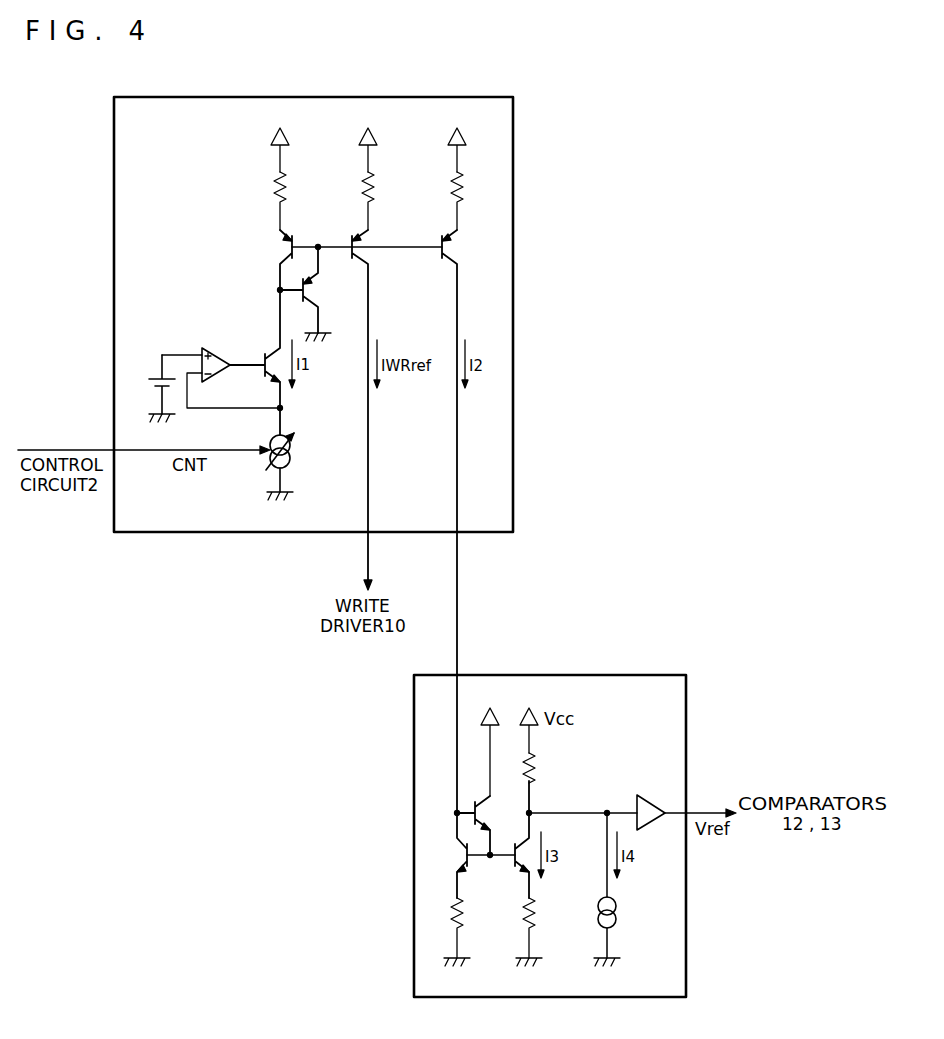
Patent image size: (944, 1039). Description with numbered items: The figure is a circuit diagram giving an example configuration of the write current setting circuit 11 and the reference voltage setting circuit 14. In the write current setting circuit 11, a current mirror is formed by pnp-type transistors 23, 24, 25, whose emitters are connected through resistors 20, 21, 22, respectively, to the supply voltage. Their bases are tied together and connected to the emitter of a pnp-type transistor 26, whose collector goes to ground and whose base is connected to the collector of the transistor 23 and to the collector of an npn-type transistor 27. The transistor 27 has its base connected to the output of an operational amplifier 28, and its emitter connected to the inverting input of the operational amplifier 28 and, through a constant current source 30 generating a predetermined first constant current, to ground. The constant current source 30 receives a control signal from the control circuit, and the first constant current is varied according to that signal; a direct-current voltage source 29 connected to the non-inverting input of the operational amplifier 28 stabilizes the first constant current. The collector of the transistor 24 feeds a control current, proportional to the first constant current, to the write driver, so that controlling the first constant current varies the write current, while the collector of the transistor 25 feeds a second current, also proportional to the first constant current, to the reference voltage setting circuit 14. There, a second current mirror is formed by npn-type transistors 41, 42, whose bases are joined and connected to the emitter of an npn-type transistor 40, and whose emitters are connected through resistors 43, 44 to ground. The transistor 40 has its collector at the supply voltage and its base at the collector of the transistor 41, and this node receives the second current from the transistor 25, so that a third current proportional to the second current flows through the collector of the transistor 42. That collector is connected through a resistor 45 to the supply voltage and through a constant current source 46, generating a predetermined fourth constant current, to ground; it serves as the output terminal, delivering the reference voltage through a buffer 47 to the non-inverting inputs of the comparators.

The write current setting circuit 11 is at (513, 318).
The reference voltage setting circuit 14 is at (414, 836).
The resistor 20 is at (262, 201).
The resistor 21 is at (351, 201).
The resistor 22 is at (439, 201).
The pnp-type transistor 23 is at (274, 260).
The pnp-type transistor 24 is at (350, 241).
The pnp-type transistor 25 is at (465, 521).
The pnp-type transistor 26 is at (313, 294).
The npn-type transistor 27 is at (264, 358).
The operational amplifier 28 is at (202, 351).
The direct-current voltage source 29 is at (149, 388).
The constant current source 30 is at (296, 466).
The npn-type transistor 40 is at (488, 825).
The npn-type transistor 41 is at (448, 855).
The npn-type transistor 42 is at (515, 862).
The resistor 43 is at (471, 932).
The resistor 44 is at (546, 932).
The resistor 45 is at (550, 768).
The constant current source 46 is at (624, 889).
The buffer 47 is at (661, 800).